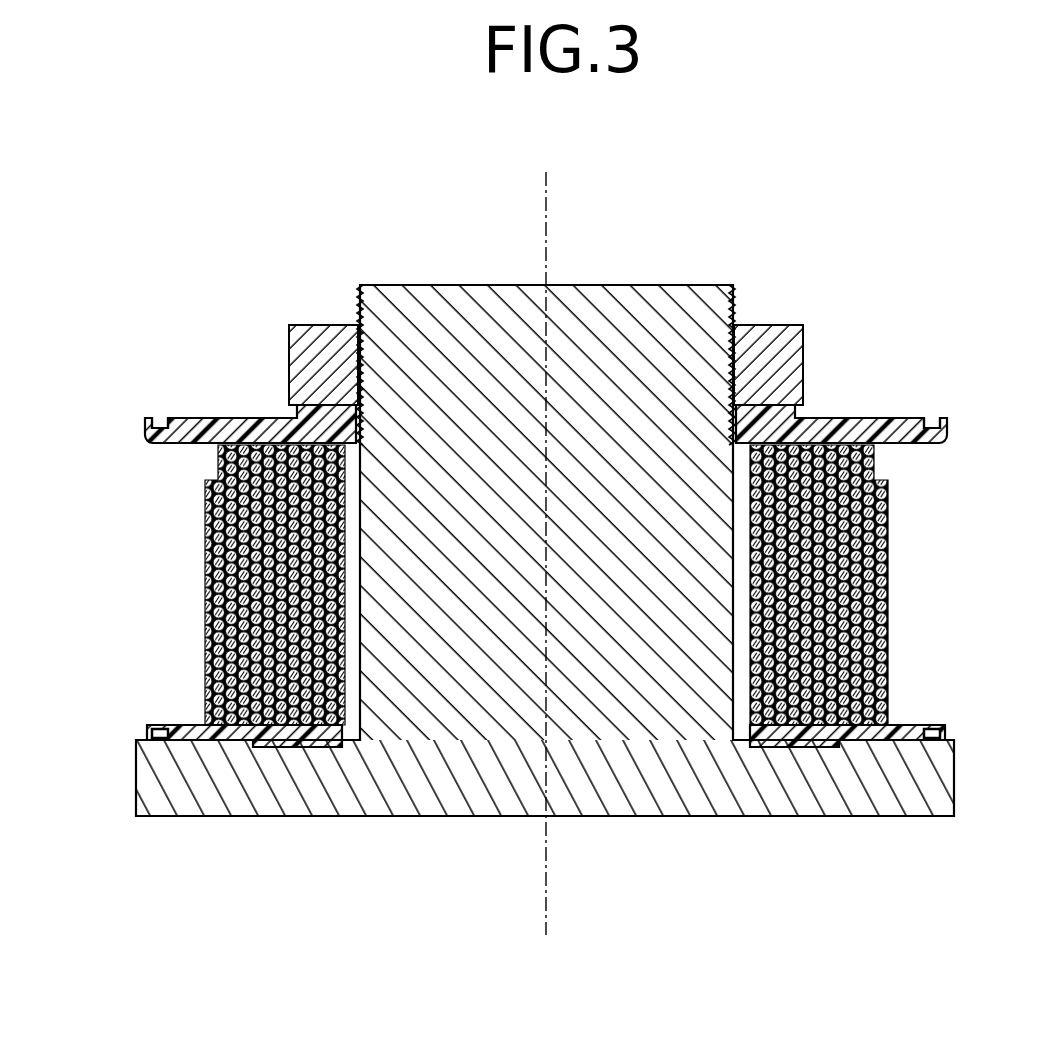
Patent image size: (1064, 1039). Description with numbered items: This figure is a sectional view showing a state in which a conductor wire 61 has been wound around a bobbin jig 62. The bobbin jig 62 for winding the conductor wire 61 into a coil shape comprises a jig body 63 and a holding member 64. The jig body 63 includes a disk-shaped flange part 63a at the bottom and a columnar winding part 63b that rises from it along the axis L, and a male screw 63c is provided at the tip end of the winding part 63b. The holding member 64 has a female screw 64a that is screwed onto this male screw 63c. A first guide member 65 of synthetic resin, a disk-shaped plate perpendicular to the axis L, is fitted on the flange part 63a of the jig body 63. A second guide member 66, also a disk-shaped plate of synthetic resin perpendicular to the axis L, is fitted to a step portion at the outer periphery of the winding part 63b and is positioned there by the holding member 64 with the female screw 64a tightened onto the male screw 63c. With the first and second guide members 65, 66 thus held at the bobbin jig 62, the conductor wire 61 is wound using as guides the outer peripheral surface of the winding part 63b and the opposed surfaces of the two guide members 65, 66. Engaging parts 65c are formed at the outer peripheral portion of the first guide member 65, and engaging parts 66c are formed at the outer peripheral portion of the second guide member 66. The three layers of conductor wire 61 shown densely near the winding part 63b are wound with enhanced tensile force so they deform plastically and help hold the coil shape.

The conductor wire 61 is at (890, 574).
The bobbin jig 62 is at (872, 190).
The jig body 63 is at (545, 541).
The flange part 63a is at (887, 793).
The winding part 63b is at (372, 605).
The male screw 63c is at (357, 300).
The holding member 64 is at (581, 298).
The female screw 64a is at (362, 353).
The first guide member 65 is at (545, 804).
The engaging parts 65c is at (152, 742).
The second guide member 66 is at (539, 370).
The engaging parts 66c is at (157, 414).
The axis L is at (548, 228).